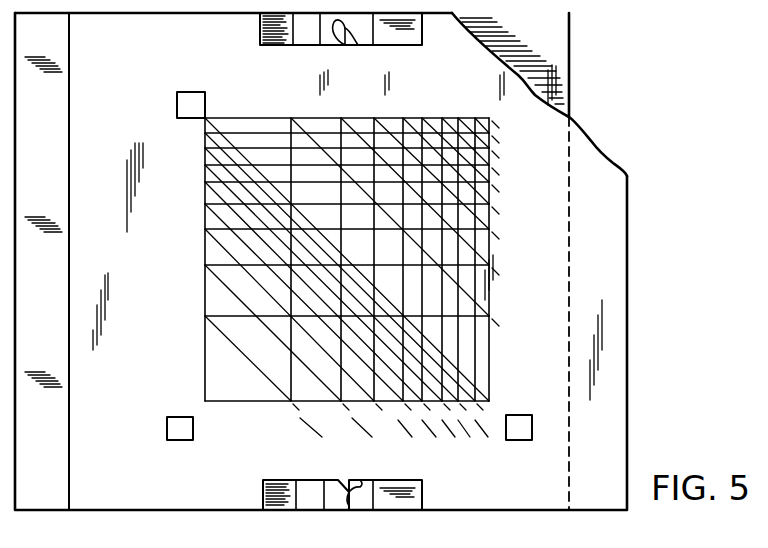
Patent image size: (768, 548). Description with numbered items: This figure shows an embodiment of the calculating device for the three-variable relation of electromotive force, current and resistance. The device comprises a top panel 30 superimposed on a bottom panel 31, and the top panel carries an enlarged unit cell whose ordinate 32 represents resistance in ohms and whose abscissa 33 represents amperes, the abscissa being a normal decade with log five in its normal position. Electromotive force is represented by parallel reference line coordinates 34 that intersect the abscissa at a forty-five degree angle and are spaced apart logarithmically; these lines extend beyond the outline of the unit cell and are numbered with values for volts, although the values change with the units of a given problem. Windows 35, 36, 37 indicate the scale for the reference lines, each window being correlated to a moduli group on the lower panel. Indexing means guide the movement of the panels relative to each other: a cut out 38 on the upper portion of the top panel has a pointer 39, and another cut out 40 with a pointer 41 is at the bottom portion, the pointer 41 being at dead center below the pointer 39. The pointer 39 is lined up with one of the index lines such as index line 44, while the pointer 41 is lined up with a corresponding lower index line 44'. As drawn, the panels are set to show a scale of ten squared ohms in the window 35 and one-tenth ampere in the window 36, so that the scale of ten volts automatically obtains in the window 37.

The top panel 30 is at (620, 228).
The bottom panel 31 is at (562, 58).
The ordinate 32 is at (204, 348).
The abscissa 33 is at (281, 407).
The parallel reference line coordinates 34 is at (292, 125).
The window 35 is at (178, 102).
The window 36 is at (172, 417).
The window 37 is at (533, 438).
The cut out 38 is at (397, 45).
The pointer 39 is at (358, 44).
The cut out 40 is at (417, 486).
The pointer 41 is at (366, 470).
The index line 44 is at (327, 49).
The index line 44' is at (329, 516).